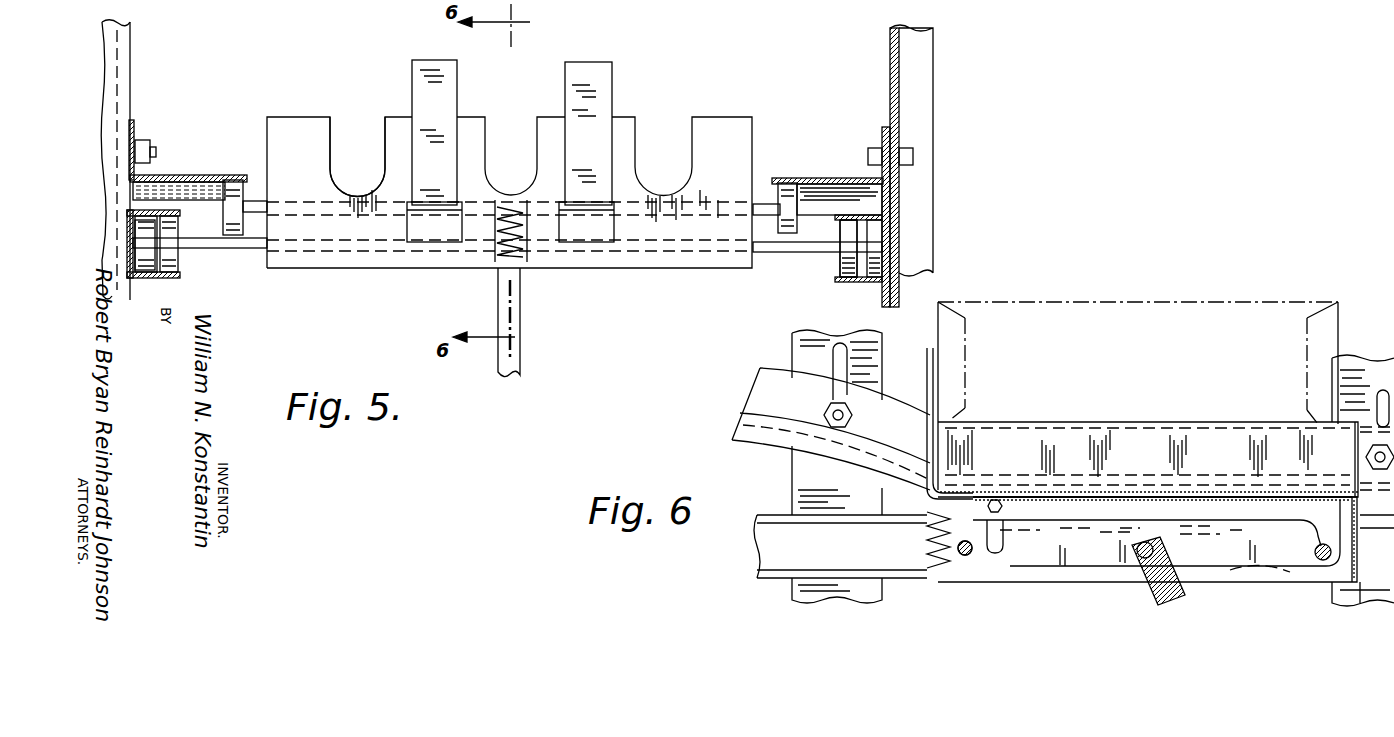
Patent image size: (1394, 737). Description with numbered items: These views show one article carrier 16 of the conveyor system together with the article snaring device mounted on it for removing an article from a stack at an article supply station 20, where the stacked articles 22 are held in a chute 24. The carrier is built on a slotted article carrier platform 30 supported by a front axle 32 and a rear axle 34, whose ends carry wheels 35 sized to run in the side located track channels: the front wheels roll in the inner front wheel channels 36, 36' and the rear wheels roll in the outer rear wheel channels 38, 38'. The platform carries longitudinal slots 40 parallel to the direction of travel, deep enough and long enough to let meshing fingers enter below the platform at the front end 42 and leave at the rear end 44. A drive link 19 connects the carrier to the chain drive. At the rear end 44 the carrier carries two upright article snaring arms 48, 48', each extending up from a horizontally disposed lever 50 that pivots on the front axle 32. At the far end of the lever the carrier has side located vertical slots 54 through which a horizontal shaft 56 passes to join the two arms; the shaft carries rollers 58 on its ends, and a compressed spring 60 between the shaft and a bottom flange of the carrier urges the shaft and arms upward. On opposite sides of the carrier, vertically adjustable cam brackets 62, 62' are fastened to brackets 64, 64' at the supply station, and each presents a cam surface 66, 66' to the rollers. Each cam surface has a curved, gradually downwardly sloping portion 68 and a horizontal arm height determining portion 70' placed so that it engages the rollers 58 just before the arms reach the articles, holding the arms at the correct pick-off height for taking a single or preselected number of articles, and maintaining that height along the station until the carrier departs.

In FIG. 5, the article carrier 16 is at (374, 268).
In FIG. 6, the article carrier 16 is at (1042, 565).
In FIG. 5, the drive link 19 is at (500, 356).
In FIG. 6, the drive link 19 is at (1152, 590).
In FIG. 6, the article supply station 20 is at (1075, 297).
In FIG. 6, the article 22 is at (1148, 302).
In FIG. 5, the chute 24 is at (938, 166).
In FIG. 5, the article carrier platform 30 is at (740, 117).
In FIG. 6, the article carrier platform 30 is at (1350, 425).
In FIG. 6, the front axle 32 is at (1310, 535).
In FIG. 5, the rear axle 34 is at (782, 233).
In FIG. 6, the rear axle 34 is at (958, 558).
In FIG. 5, the wheel 35 is at (180, 257).
In FIG. 6, the wheel 35 is at (1262, 572).
In FIG. 5, the front wheel channel 36 is at (831, 258).
In FIG. 5, the front wheel channel 36' is at (190, 260).
In FIG. 5, the rear wheel channel 38 is at (853, 265).
In FIG. 5, the rear wheel channel 38' is at (160, 187).
In FIG. 5, the slot 40 is at (345, 126).
In FIG. 6, the front end 42 is at (1343, 572).
In FIG. 6, the rear end 44 is at (920, 504).
In FIG. 5, the article snaring arm 48 is at (619, 150).
In FIG. 5, the article snaring arm 48' is at (406, 141).
In FIG. 6, the article snaring arm 48' is at (928, 423).
In FIG. 6, the lever 50 is at (1078, 522).
In FIG. 6, the slot 54 is at (990, 556).
In FIG. 5, the shaft 56 is at (762, 204).
In FIG. 5, the roller 58 is at (236, 180).
In FIG. 6, the roller 58 is at (1013, 493).
In FIG. 5, the spring 60 is at (510, 222).
In FIG. 6, the spring 60 is at (927, 545).
In FIG. 5, the cam bracket 62 is at (842, 208).
In FIG. 5, the cam bracket 62' is at (188, 125).
In FIG. 6, the cam bracket 62' is at (792, 429).
In FIG. 6, the bracket 64 is at (1363, 446).
In FIG. 6, the bracket 64' is at (811, 466).
In FIG. 5, the cam surface 66 is at (839, 169).
In FIG. 5, the cam surface 66' is at (182, 164).
In FIG. 6, the downwardly sloping portion 68 is at (856, 457).
In FIG. 6, the arm height determining portion 70' is at (1148, 459).